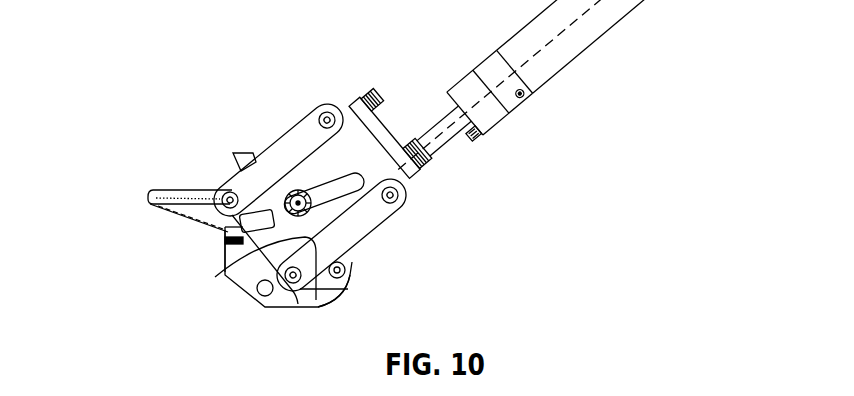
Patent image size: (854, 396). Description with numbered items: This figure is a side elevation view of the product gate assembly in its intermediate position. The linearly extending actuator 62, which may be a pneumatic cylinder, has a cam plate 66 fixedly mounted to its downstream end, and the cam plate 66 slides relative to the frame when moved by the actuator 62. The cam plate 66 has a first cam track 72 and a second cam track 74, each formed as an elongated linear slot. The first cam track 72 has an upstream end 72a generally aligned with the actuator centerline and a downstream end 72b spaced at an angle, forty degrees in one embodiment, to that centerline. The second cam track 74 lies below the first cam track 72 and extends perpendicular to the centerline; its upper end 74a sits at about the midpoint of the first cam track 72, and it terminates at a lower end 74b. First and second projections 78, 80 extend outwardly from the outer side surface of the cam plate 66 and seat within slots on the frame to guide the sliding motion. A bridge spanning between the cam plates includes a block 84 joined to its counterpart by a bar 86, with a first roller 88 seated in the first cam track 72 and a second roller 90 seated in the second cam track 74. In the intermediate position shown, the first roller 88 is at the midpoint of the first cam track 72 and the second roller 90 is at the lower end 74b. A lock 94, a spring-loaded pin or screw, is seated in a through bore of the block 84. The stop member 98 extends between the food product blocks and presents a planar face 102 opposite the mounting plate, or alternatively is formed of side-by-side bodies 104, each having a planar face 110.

The actuator 62 is at (559, 53).
The cam plate 66 is at (381, 236).
The first cam track 72 is at (326, 178).
The upstream end of first cam track 72a is at (384, 158).
The downstream end of first cam track 72b is at (228, 232).
The second cam track 74 is at (309, 283).
The upper end of second cam track 74a is at (225, 272).
The lower end of second cam track 74b is at (350, 275).
The first projection 78 is at (246, 188).
The second projection 80 is at (298, 305).
The second block 84 is at (243, 278).
The bar 86 is at (263, 306).
The first roller 88 is at (292, 190).
The second roller 90 is at (336, 282).
The lock 94 is at (246, 156).
The stop member 98 is at (176, 214).
The planar face 102 is at (177, 191).
The body 104 is at (134, 223).
The planar face 110 is at (163, 163).